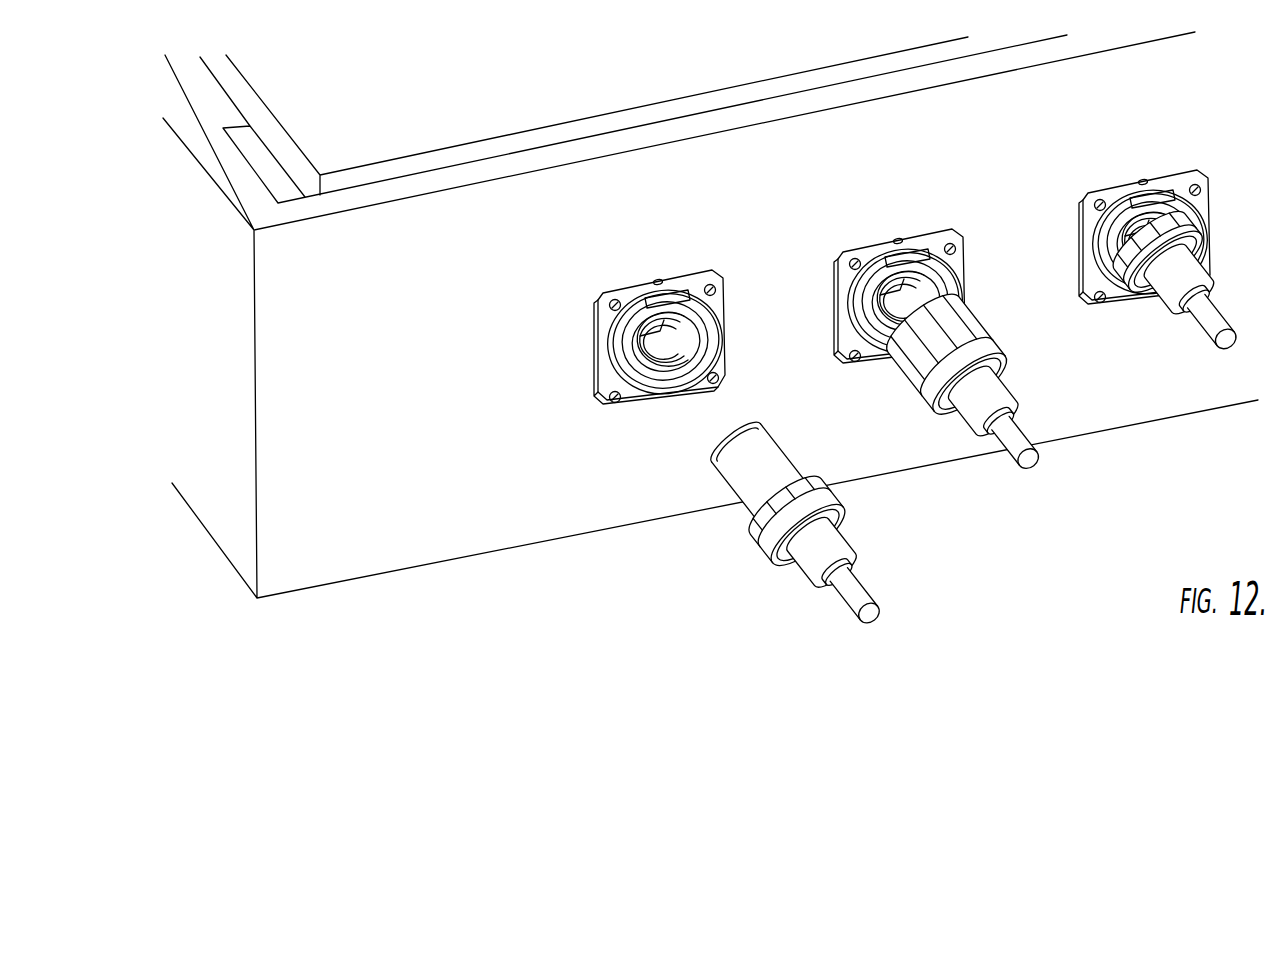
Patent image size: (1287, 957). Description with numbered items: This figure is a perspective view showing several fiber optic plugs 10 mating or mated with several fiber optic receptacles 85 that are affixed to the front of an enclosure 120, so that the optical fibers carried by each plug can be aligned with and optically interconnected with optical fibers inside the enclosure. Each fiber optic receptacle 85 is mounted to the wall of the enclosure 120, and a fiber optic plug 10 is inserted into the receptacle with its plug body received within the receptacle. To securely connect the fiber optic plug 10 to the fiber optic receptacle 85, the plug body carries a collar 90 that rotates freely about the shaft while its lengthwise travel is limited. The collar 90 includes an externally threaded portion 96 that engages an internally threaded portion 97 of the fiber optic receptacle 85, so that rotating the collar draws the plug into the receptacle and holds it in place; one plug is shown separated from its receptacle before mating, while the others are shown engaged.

The enclosure 120 is at (202, 496).
The fiber optic receptacle 85 is at (678, 250).
The internally threaded portion 97 is at (672, 382).
The externally threaded portion 96 is at (969, 326).
The collar 90 is at (1001, 367).
The fiber optic plug 10 is at (730, 532).